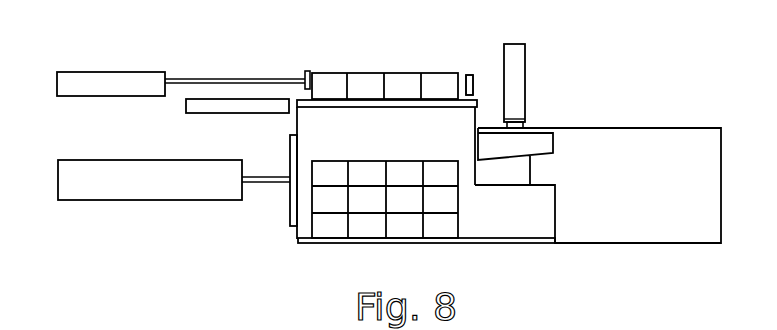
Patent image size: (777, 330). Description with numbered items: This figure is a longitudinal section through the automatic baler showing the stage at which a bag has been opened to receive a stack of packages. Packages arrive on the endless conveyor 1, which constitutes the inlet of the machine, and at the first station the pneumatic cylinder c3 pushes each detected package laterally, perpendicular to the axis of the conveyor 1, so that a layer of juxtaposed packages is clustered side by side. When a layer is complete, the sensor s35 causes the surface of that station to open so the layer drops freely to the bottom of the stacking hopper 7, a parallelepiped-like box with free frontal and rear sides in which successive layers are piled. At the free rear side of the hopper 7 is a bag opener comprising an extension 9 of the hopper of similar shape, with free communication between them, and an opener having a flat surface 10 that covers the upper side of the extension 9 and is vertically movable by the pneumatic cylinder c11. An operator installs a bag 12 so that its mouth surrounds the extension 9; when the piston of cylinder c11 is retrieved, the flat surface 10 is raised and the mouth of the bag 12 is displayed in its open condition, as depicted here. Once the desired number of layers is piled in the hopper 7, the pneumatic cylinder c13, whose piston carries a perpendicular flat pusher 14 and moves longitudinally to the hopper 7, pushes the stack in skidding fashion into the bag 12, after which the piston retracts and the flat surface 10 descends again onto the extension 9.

The pneumatic cylinder c3 is at (140, 72).
The endless conveyor 1 is at (240, 116).
The sensor s35 is at (475, 80).
The pneumatic cylinder c11 is at (525, 98).
The stacking hopper 7 is at (446, 143).
The flat pusher 14 is at (286, 198).
The pneumatic cylinder c13 is at (155, 200).
The extension 9 is at (535, 227).
The bag 12 is at (603, 245).
The flat surface 10 is at (535, 143).